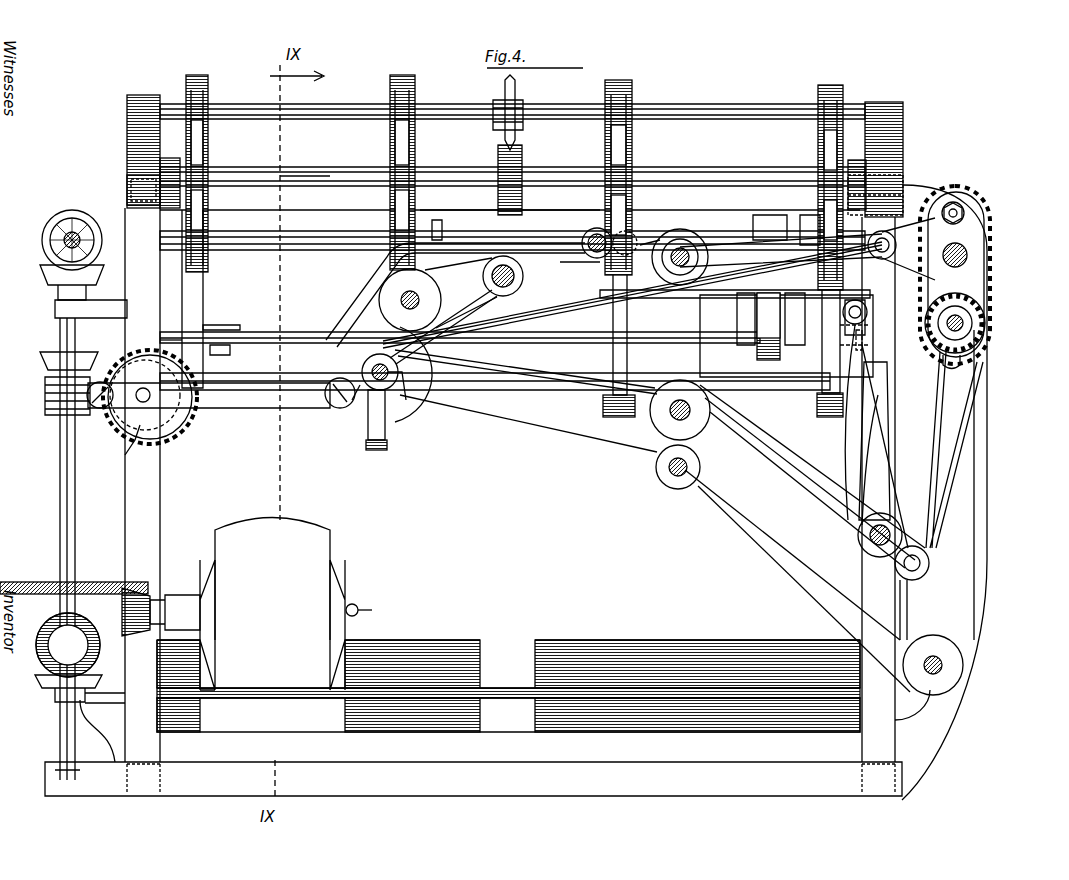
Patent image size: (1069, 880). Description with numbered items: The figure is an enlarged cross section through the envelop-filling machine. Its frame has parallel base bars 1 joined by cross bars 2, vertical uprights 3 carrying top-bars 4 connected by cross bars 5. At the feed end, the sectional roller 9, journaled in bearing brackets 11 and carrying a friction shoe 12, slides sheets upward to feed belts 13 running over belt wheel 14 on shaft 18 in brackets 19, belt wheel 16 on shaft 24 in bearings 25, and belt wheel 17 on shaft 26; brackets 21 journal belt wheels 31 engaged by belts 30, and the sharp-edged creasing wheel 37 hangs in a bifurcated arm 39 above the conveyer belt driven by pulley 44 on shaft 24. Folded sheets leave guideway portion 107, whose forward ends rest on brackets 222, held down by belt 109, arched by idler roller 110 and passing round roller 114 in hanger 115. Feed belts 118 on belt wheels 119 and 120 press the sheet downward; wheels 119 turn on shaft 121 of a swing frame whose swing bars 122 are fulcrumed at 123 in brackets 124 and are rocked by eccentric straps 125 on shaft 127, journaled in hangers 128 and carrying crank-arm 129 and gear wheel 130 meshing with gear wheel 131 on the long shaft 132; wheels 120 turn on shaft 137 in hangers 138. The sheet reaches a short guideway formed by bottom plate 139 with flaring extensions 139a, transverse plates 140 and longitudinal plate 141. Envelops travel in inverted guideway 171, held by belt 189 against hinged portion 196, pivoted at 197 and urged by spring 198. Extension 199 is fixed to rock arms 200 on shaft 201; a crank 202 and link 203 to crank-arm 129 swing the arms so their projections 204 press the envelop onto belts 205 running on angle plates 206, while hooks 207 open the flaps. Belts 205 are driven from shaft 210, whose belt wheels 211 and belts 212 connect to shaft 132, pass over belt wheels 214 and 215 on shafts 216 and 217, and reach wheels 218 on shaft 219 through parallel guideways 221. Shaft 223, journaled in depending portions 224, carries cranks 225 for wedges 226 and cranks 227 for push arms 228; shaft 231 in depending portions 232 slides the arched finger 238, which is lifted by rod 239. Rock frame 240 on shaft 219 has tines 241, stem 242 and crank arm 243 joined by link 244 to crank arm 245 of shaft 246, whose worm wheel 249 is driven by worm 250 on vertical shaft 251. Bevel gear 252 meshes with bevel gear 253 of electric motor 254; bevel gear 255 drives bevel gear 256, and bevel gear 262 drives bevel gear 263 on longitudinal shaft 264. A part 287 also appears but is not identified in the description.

The base bars 1 is at (147, 797).
The cross bars 2 is at (520, 797).
The vertical uprights 3 is at (918, 747).
The top-bars 4 is at (130, 188).
The cross bars 5 is at (282, 212).
The sectional roller 9 is at (535, 730).
The bearing brackets 11 is at (101, 731).
The friction pad or shoe 12 is at (535, 642).
The belts 13 is at (195, 302).
The belt wheel 14 is at (210, 345).
The belt wheel 16 is at (215, 125).
The belt wheel 17 is at (205, 270).
The transverse shaft 18 is at (288, 390).
The brackets 19 is at (508, 681).
The brackets 21 is at (140, 95).
The shaft 24 is at (302, 176).
The bearings 25 is at (160, 165).
The shaft 26 is at (282, 240).
The belts 30 is at (208, 78).
The belt wheels 31 is at (213, 95).
The creasing wheel 37 is at (503, 95).
The bifurcated arm 39 is at (523, 105).
The pulley 44 is at (498, 160).
The guideway portion 107 is at (866, 308).
The belt 109 is at (768, 360).
The idler roller 110 is at (585, 312).
The roller 114 is at (768, 360).
The hanger 115 is at (772, 215).
The feed belts 118 is at (650, 225).
The belt wheels 119 is at (685, 242).
The belt wheels 120 is at (425, 275).
The shaft 121 is at (710, 225).
The swing bars 122 is at (775, 245).
The fulcrum 123 is at (888, 236).
The brackets 124 is at (900, 240).
The eccentric straps 125 is at (962, 210).
The shaft 127 is at (964, 318).
The hangers 128 is at (960, 248).
The crank-arm 129 is at (962, 362).
The gear wheel 130 is at (990, 346).
The gear wheel 131 is at (990, 254).
The shaft 132 is at (975, 228).
The shaft 137 is at (402, 297).
The hangers 138 is at (380, 212).
The bottom plate 139 is at (262, 345).
The flaring extensions 139a is at (425, 420).
The transverse plates 140 is at (215, 332).
The longitudinal plate 141 is at (172, 338).
The inverted U-shaped guideway 171 is at (868, 333).
The endless belt 189 is at (865, 345).
The hinged portion 196 is at (860, 440).
The hinge 197 is at (770, 455).
The spring 198 is at (790, 475).
The extension 199 is at (858, 545).
The rock arms 200 is at (890, 490).
The short shaft 201 is at (890, 535).
The crank 202 is at (925, 560).
The link 203 is at (950, 470).
The forwardly projecting portions 204 is at (880, 370).
The belts 205 is at (830, 608).
The angle plates 206 is at (735, 420).
The hooks 207 is at (866, 440).
The shaft 210 is at (942, 668).
The belt wheels 211 is at (945, 645).
The belts 212 is at (976, 573).
The belt wheels 214 is at (660, 428).
The belt wheels 215 is at (676, 490).
The shaft 216 is at (675, 418).
The shaft 217 is at (672, 475).
The wheels 218 is at (360, 400).
The shaft 219 is at (372, 366).
The guideways 221 is at (668, 378).
The brackets 222 is at (715, 327).
The shaft 223 is at (528, 299).
The depending portions 224 is at (437, 222).
The cranks 225 is at (480, 266).
The wedges 226 is at (380, 302).
The cranks 227 is at (511, 267).
The push arms 228 is at (485, 292).
The shaft 231 is at (592, 238).
The depending portions 232 is at (600, 200).
The arched finger 238 is at (490, 236).
The rod 239 is at (509, 257).
The rock frame 240 is at (335, 408).
The tines 241 is at (398, 420).
The stem 242 is at (372, 445).
The crank arm 243 is at (364, 445).
The link 244 is at (254, 410).
The crank arm 245 is at (120, 455).
The short longitudinal shaft 246 is at (115, 425).
The worm wheel 249 is at (170, 440).
The worm 250 is at (48, 415).
The vertical shaft 251 is at (60, 487).
The bevel gear 252 is at (20, 582).
The bevel gear 253 is at (160, 580).
The electric motor 254 is at (335, 545).
The bevel gear 255 is at (50, 690).
The bevel gear 256 is at (50, 628).
The bevel gear 262 is at (46, 280).
The bevel gear 263 is at (44, 258).
The longitudinally extending shaft 264 is at (68, 232).
The link 287 is at (605, 262).